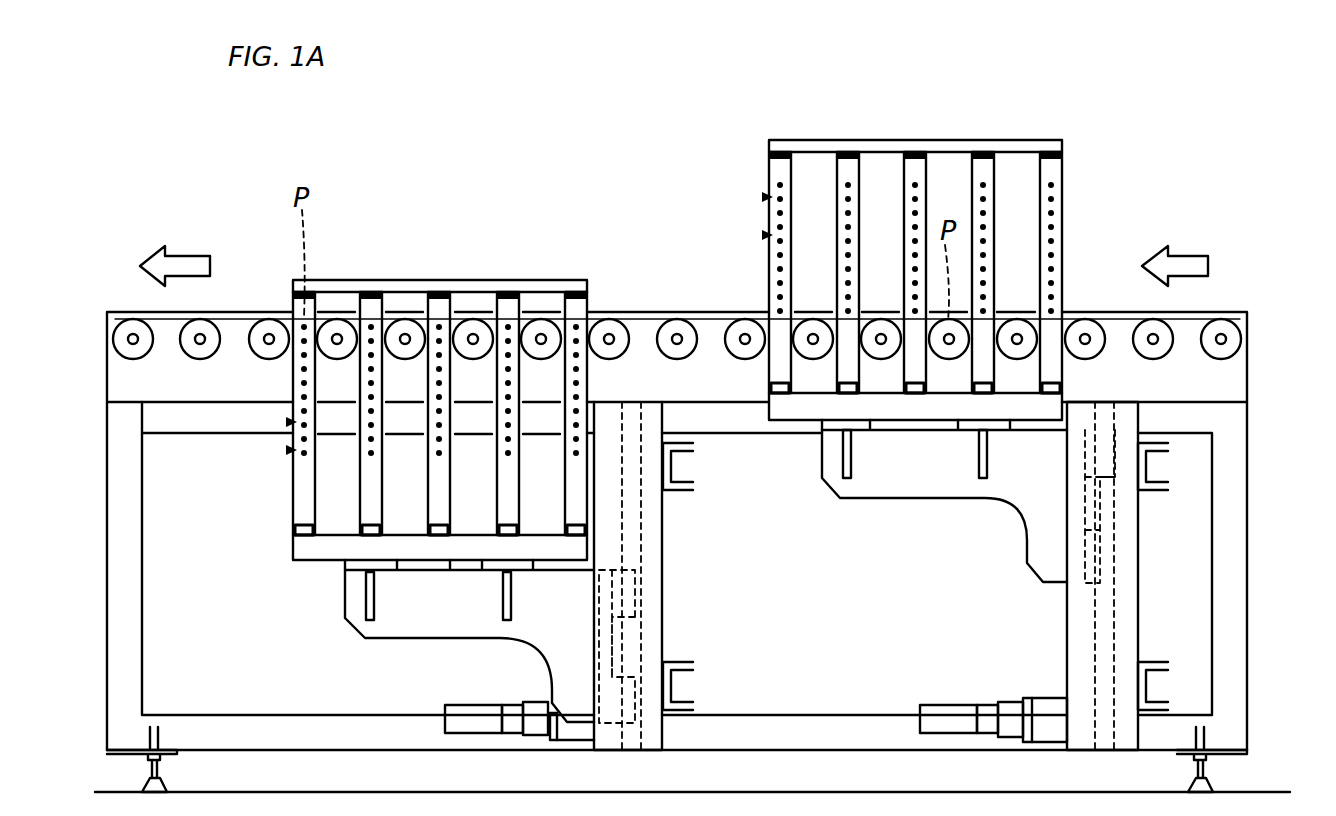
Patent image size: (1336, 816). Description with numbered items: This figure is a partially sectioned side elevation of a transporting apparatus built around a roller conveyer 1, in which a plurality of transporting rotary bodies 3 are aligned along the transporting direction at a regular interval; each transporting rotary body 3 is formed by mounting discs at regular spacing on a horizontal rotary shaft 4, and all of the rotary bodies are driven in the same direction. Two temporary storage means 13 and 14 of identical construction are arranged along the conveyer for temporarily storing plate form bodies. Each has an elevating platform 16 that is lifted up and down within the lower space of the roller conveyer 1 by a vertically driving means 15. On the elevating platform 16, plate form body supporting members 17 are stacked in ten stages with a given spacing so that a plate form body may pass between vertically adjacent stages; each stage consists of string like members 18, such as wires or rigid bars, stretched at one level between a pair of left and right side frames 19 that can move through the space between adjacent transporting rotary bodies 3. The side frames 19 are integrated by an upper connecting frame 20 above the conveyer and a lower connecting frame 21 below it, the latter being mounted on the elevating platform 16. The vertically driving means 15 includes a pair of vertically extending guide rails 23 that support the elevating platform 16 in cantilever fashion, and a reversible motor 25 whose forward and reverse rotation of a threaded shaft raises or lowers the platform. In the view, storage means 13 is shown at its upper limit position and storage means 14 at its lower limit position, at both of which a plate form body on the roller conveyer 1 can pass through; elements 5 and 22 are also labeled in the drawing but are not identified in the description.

The roller conveyer 1 is at (1252, 328).
The transporting rotary body 3 is at (184, 351).
The rotary shaft 4 is at (269, 341).
The roller guide 5 is at (185, 325).
The temporary storage means 13 is at (1072, 216).
The temporary storage means 14 is at (557, 278).
The vertically driving means 15 is at (668, 581).
The elevating platform 16 is at (345, 547).
The plate form body supporting member 17 is at (290, 451).
The string like member 18 is at (438, 326).
The side frame 19 is at (368, 500).
The upper connecting frame 20 is at (506, 292).
The lower connecting frame 21 is at (505, 533).
The lift cylinder 22 is at (623, 690).
The vertically extending guide rail 23 is at (640, 648).
The reversible motor 25 is at (460, 714).